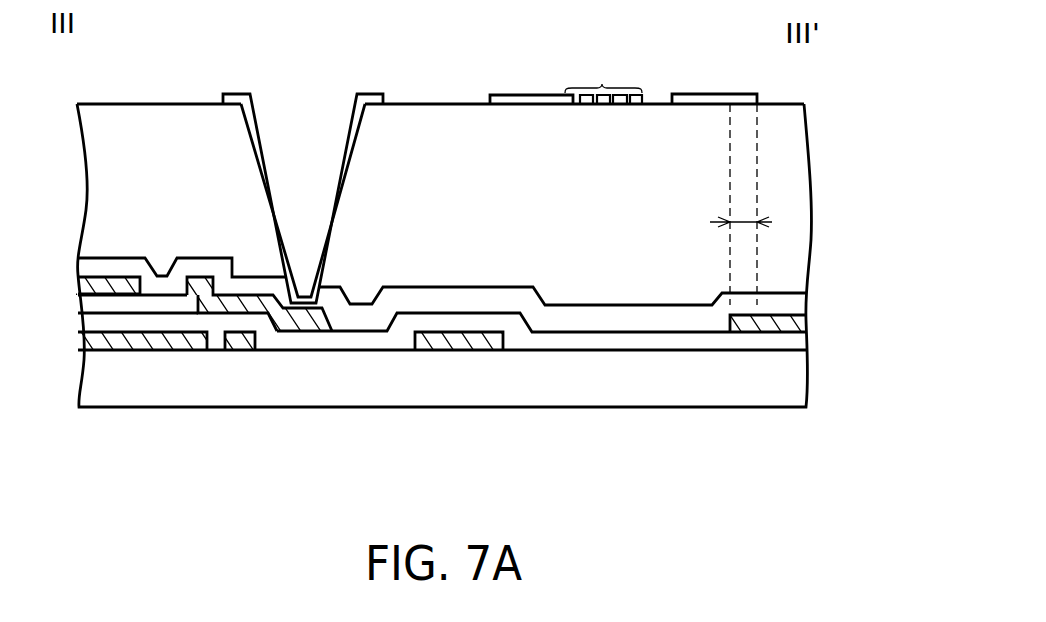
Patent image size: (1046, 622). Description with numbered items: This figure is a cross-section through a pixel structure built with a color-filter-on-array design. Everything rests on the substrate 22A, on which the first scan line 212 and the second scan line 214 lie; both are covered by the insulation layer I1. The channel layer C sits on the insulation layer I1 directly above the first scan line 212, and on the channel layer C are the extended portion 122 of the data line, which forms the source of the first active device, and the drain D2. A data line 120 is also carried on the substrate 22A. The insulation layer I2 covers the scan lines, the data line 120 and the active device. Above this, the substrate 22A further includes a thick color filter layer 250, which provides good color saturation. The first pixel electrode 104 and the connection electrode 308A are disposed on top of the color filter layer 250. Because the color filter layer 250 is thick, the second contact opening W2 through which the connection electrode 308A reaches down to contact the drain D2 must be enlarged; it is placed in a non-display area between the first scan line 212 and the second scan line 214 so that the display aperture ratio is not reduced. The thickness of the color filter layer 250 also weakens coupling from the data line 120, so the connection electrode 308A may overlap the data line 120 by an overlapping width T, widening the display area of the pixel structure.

The substrate 22A is at (637, 372).
The color filter layer 250 is at (467, 124).
The connection electrode 308A is at (366, 103).
The first pixel electrode 104 is at (602, 85).
The second contact opening W2 is at (266, 154).
The overlapping width T is at (738, 222).
The insulation layer I2 is at (560, 316).
The insulation layer I1 is at (577, 346).
The channel layer C is at (127, 309).
The extended portion of the data line 122 is at (87, 290).
The drain D2 is at (278, 320).
The first scan line 212 is at (183, 343).
The second scan line 214 is at (447, 352).
The data line 120 is at (762, 327).